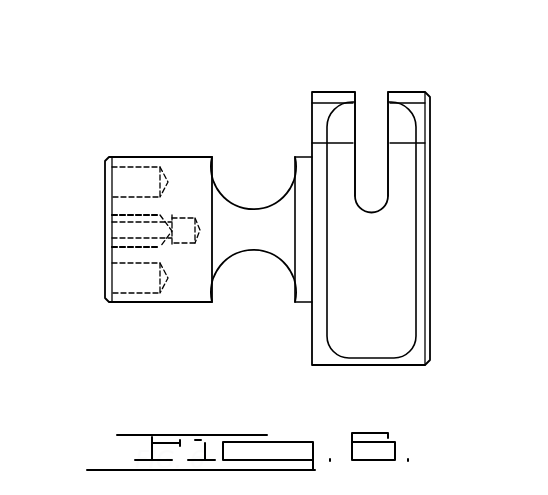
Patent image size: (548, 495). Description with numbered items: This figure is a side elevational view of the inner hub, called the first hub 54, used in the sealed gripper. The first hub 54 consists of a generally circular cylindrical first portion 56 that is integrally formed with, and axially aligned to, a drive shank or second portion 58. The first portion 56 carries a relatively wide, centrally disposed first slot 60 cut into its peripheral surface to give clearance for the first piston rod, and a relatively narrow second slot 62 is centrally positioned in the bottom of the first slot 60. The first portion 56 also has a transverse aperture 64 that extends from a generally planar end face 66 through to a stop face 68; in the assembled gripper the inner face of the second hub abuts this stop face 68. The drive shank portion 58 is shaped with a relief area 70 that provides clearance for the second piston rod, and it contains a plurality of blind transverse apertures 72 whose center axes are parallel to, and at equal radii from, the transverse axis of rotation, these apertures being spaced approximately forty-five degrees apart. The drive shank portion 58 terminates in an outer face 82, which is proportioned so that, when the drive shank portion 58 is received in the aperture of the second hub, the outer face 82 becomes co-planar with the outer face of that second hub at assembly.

The first hub 54 is at (222, 116).
The first portion 56 is at (325, 360).
The drive shank portion 58 is at (182, 303).
The first slot 60 is at (412, 278).
The second slot 62 is at (388, 110).
The transverse aperture 64 is at (397, 137).
The end face 66 is at (432, 170).
The stop face 68 is at (305, 92).
The relief area 70 is at (235, 276).
The blind transverse apertures 72 is at (132, 166).
The outer face 82 is at (107, 278).